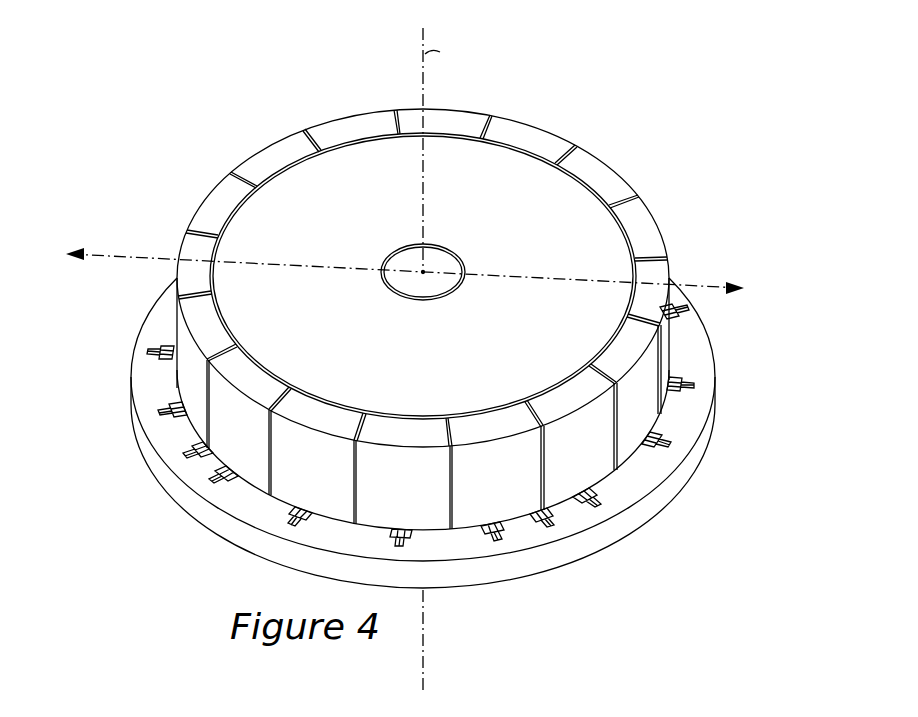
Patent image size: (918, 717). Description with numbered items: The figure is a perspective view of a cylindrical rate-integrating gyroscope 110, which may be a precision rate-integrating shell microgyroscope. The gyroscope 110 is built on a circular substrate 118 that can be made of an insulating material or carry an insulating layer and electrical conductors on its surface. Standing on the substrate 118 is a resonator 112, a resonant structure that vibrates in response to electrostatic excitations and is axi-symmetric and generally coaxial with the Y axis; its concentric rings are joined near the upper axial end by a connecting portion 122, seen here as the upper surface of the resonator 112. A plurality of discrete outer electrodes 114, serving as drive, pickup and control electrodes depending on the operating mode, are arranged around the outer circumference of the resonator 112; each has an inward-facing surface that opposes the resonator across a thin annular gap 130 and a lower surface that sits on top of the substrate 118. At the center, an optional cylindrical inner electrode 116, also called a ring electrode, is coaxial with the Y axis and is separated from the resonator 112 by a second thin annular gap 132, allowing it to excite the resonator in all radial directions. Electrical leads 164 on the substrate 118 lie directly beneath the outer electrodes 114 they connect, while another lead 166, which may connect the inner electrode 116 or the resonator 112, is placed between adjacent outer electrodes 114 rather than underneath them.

The gyroscope 110 is at (602, 82).
The resonator 112 is at (292, 203).
The outer electrodes 114 is at (664, 275).
The inner electrode 116 is at (421, 268).
The substrate 118 is at (610, 533).
The connecting portion 122 is at (548, 349).
The annular gap 130 is at (522, 153).
The annular gap 132 is at (390, 293).
The leads 164 is at (282, 520).
The lead 166 is at (550, 521).